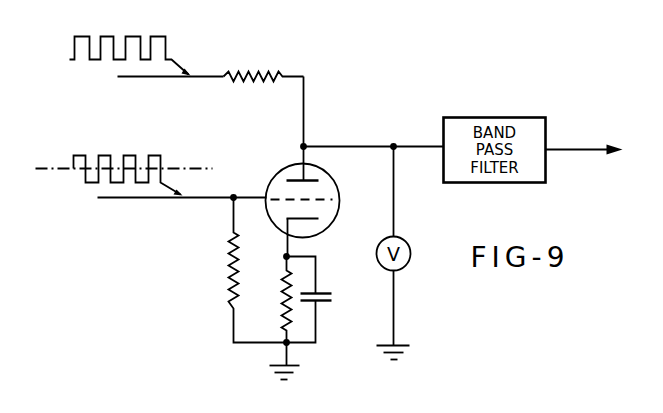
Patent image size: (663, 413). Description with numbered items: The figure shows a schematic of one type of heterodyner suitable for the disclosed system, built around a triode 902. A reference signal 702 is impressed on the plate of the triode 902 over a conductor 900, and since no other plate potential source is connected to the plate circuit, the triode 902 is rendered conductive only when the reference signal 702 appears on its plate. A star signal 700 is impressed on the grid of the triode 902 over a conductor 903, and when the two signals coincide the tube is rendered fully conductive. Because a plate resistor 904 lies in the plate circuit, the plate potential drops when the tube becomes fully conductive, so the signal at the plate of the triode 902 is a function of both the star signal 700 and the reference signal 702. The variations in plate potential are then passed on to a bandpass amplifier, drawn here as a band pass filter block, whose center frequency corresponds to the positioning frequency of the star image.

The reference signal 702 is at (168, 44).
The conductor 900 is at (185, 78).
The plate resistor 904 is at (250, 84).
The star signal 700 is at (166, 159).
The conductor 903 is at (140, 199).
The triode 902 is at (338, 181).